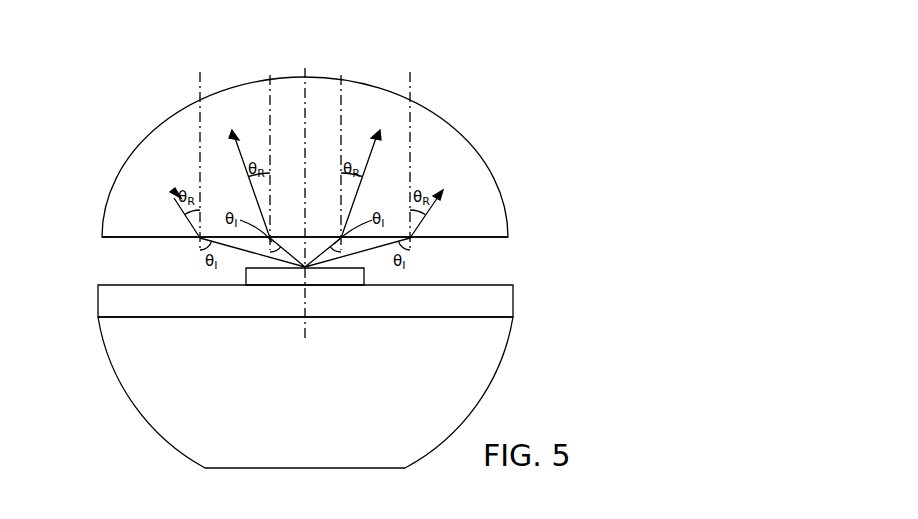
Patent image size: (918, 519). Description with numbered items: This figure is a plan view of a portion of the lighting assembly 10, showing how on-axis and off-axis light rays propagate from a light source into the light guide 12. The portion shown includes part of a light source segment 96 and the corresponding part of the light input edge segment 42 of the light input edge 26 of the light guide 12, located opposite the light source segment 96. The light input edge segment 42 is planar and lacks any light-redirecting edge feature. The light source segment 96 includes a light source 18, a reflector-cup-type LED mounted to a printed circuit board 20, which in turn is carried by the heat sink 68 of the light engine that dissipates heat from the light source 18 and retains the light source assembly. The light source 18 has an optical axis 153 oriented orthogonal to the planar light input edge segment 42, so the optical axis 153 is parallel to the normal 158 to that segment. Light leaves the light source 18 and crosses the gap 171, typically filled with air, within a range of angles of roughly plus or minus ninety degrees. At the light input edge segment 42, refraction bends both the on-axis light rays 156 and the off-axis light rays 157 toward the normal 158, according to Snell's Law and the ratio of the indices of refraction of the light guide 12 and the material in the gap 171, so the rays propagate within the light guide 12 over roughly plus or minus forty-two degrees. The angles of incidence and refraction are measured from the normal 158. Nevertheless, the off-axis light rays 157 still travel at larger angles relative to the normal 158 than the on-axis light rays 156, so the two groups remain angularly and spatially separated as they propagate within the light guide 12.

The lighting assembly 10 is at (236, 42).
The light guide 12 is at (453, 142).
The light source 18 is at (335, 280).
The printed circuit board 20 is at (390, 303).
The light input edge 26 is at (493, 240).
The light input edge segment 42 is at (114, 240).
The heat sink 68 is at (475, 368).
The light source segment 96 is at (217, 303).
The optical axis 153 is at (305, 65).
The on-axis light rays 156 is at (240, 152).
The off-axis light rays 157 is at (187, 220).
The normal 158 is at (200, 100).
The gap 171 is at (362, 257).